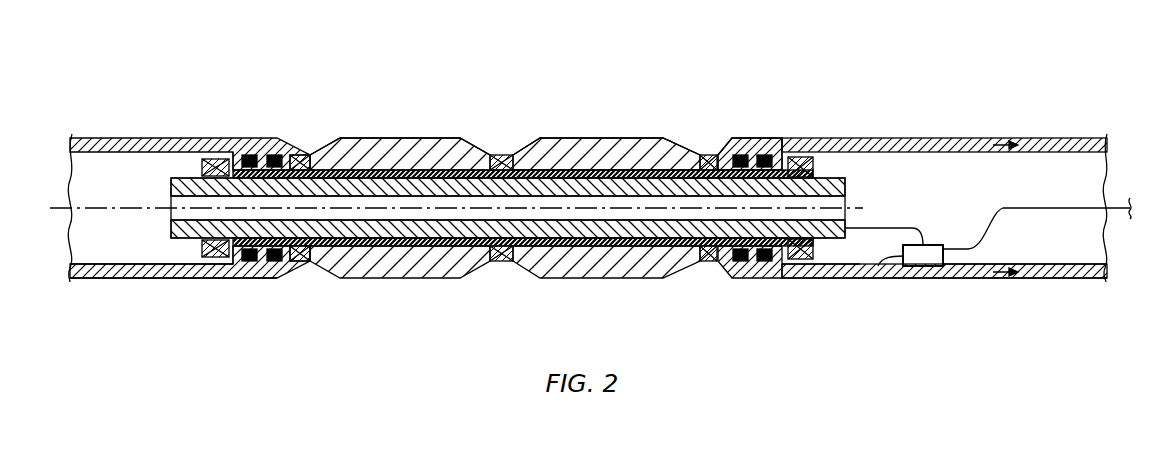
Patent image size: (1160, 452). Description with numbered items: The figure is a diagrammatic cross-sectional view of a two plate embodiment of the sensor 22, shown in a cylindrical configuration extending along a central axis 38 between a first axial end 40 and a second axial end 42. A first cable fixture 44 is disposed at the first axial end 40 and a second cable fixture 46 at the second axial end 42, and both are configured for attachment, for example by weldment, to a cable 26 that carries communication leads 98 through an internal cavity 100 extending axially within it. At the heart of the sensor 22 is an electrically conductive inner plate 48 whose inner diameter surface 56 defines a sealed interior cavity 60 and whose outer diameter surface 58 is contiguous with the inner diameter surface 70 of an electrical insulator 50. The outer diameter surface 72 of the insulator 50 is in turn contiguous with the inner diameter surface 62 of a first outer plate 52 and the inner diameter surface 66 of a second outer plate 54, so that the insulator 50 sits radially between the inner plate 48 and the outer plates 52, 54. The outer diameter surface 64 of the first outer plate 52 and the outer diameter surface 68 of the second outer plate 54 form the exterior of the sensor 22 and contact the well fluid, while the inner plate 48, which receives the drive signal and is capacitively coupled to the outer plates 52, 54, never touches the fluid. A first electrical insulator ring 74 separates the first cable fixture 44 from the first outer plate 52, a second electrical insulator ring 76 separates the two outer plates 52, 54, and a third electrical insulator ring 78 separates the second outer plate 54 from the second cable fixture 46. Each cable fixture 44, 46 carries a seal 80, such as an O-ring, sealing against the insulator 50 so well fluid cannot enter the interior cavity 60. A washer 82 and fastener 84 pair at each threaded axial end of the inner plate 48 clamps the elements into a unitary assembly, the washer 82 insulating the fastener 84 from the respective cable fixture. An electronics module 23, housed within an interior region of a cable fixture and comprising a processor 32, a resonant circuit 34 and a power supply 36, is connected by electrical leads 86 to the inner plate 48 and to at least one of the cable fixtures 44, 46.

The sensor 22 is at (834, 96).
The electronics module 23 is at (930, 266).
The cable 26 is at (1053, 146).
The processor 32 is at (923, 255).
The resonant circuit 34 is at (923, 255).
The power supply 36 is at (923, 255).
The central axis 38 is at (58, 198).
The first axial end 40 is at (136, 291).
The second axial end 42 is at (861, 278).
The first cable fixture 44 is at (181, 277).
The second cable fixture 46 is at (810, 278).
The inner plate 48 is at (461, 170).
The electrical insulator 50 is at (600, 160).
The first outer plate 52 is at (396, 124).
The second outer plate 54 is at (634, 120).
The inner diameter surface 56 is at (200, 200).
The outer diameter surface 58 is at (202, 172).
The interior cavity 60 is at (396, 216).
The inner diameter surface 62 is at (322, 154).
The outer diameter surface 64 is at (368, 137).
The inner diameter surface 66 is at (698, 156).
The outer diameter surface 68 is at (650, 140).
The inner diameter surface 70 is at (502, 154).
The outer diameter surface 72 is at (530, 168).
The first electrical insulator ring 74 is at (294, 270).
The second electrical insulator ring 76 is at (498, 262).
The third electrical insulator ring 78 is at (700, 262).
The seal 80 is at (257, 156).
The washer 82 is at (240, 262).
The fastener 84 is at (213, 277).
The electrical leads 86 is at (886, 228).
The communication leads 98 is at (1068, 207).
The internal cavity 100 is at (1083, 250).